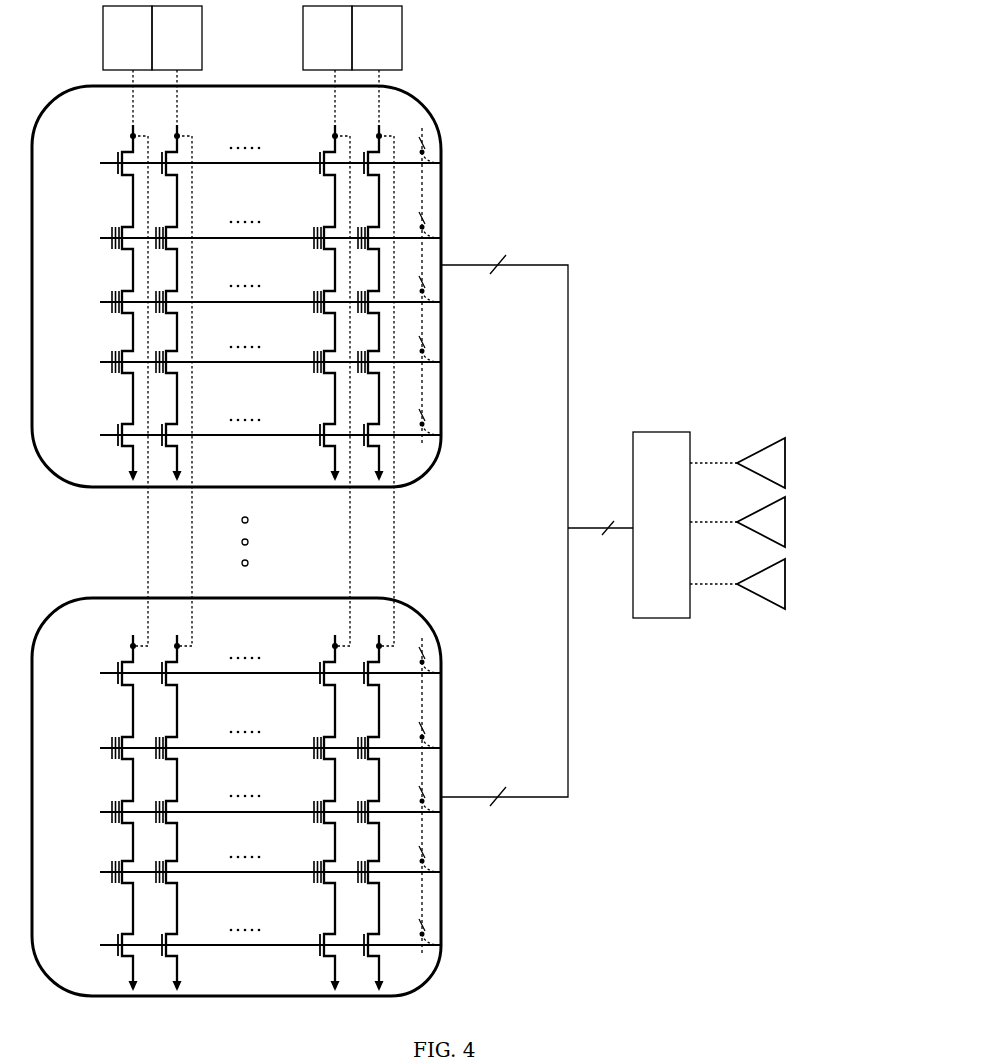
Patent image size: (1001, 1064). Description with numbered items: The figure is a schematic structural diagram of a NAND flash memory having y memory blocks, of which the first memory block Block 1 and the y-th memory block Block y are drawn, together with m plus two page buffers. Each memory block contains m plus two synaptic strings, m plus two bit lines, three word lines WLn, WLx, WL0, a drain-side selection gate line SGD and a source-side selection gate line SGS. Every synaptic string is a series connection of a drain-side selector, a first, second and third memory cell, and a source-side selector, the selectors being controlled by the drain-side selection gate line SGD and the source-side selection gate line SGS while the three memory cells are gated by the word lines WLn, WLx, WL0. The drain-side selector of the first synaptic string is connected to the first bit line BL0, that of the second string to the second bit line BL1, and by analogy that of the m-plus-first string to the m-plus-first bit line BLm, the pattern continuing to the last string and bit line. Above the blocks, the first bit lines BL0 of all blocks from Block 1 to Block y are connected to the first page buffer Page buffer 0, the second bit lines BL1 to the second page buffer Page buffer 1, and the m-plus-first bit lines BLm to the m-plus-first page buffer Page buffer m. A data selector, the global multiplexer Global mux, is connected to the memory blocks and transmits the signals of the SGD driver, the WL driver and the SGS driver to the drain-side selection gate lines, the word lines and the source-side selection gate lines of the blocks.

The first memory block Block 1 is at (235, 286).
The y-th memory block Block y is at (235, 797).
The drain-side selection gate line SGD is at (241, 418).
The word line WLn is at (241, 493).
The word line WLx is at (241, 557).
The word line WL0 is at (241, 617).
The source-side selection gate line SGS is at (241, 690).
The first bit line BL0 is at (133, 530).
The second bit line BL1 is at (177, 530).
The m+1-th bit line BLm is at (337, 530).
The first page buffer Page buffer 0 is at (127, 38).
The second page buffer Page buffer 1 is at (177, 38).
The m+1-th page buffer Page buffer m is at (327, 38).
The data selector Global mux is at (661, 525).
The drain-side selection gate driver SGD driver is at (776, 463).
The word line driver WL driver is at (770, 522).
The source-side selection gate driver SGS driver is at (776, 584).